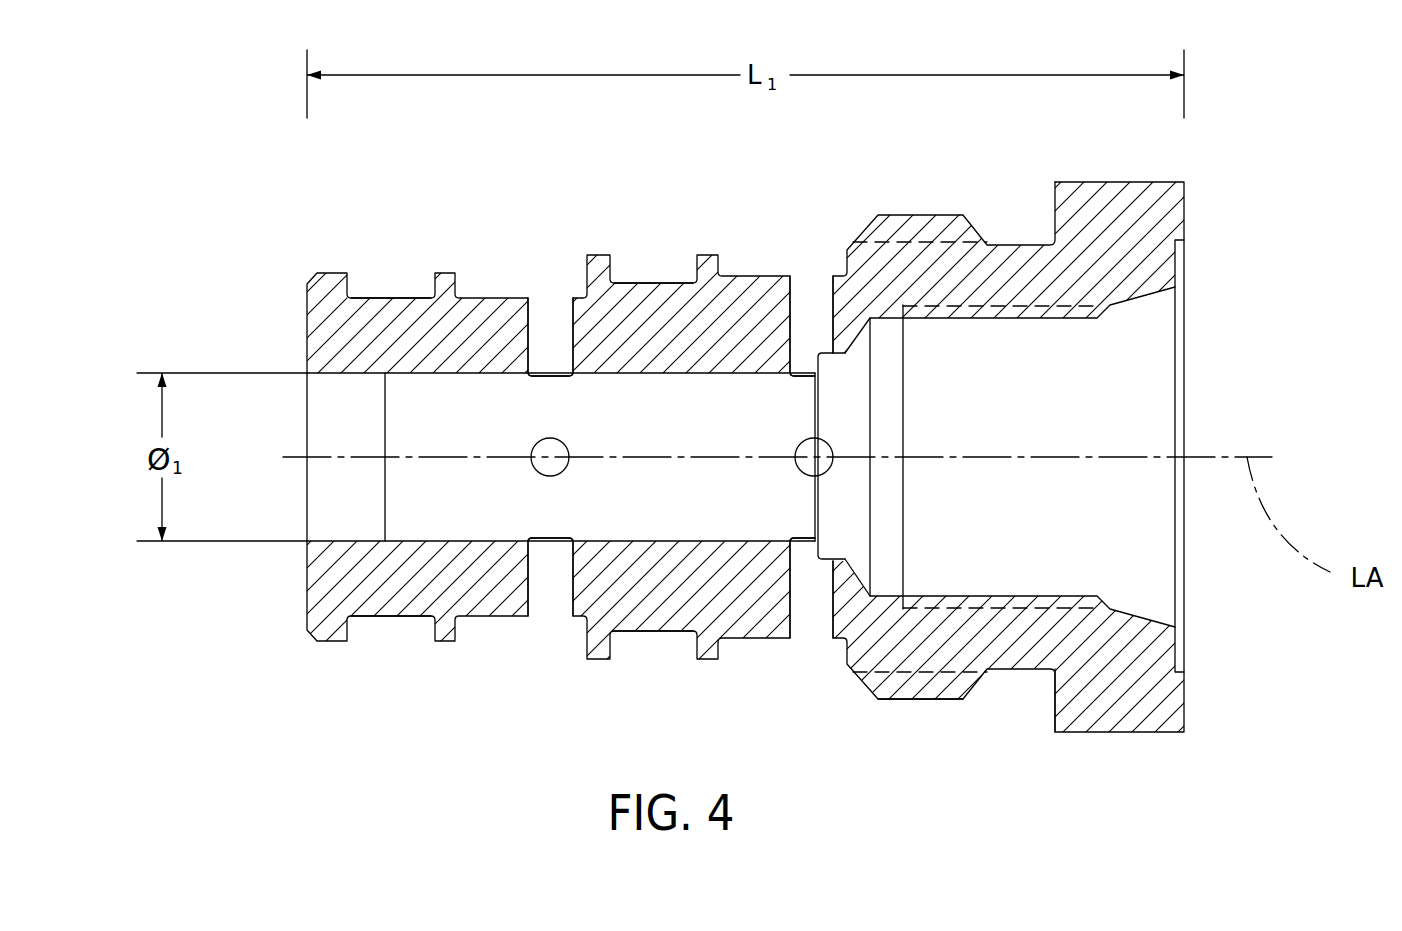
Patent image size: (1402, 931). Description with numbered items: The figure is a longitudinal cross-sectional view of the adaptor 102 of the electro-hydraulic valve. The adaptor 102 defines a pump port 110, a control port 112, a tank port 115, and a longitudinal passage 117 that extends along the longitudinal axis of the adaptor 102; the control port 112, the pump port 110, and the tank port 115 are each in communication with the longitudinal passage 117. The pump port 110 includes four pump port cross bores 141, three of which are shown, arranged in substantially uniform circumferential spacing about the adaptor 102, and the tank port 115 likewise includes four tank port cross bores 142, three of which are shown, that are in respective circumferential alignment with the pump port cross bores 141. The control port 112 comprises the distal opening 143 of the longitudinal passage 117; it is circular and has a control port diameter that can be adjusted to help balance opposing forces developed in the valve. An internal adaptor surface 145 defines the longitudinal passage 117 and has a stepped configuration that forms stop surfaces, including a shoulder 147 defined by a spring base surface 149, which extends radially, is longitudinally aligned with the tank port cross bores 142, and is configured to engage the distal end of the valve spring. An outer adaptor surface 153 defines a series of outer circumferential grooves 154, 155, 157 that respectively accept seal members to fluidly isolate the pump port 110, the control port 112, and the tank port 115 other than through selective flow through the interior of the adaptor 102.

The adaptor 102 is at (172, 223).
The pump port 110 is at (551, 288).
The control port 112 is at (294, 421).
The tank port 115 is at (815, 260).
The longitudinal passage 117 is at (1098, 386).
The pump port cross bores 141 is at (545, 320).
The tank port cross bores 142 is at (805, 300).
The distal opening 143 is at (305, 495).
The internal adaptor surface 145 is at (612, 423).
The shoulder 147 is at (826, 558).
The spring base surface 149 is at (838, 365).
The outer adaptor surface 153 is at (915, 708).
The outer circumferential groove 154 is at (1020, 668).
The outer circumferential groove 155 is at (652, 630).
The outer circumferential groove 157 is at (392, 613).